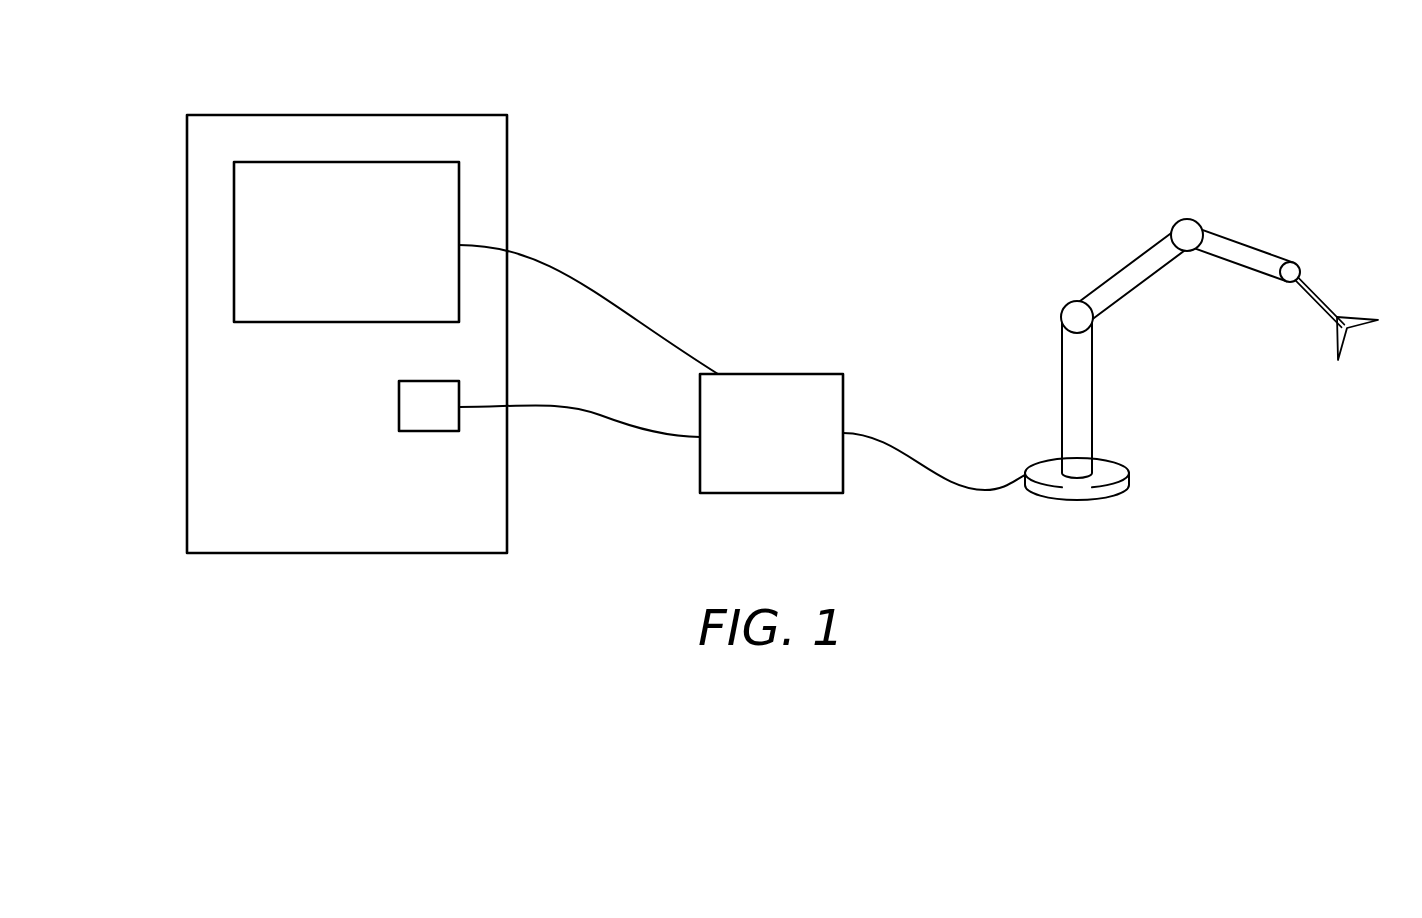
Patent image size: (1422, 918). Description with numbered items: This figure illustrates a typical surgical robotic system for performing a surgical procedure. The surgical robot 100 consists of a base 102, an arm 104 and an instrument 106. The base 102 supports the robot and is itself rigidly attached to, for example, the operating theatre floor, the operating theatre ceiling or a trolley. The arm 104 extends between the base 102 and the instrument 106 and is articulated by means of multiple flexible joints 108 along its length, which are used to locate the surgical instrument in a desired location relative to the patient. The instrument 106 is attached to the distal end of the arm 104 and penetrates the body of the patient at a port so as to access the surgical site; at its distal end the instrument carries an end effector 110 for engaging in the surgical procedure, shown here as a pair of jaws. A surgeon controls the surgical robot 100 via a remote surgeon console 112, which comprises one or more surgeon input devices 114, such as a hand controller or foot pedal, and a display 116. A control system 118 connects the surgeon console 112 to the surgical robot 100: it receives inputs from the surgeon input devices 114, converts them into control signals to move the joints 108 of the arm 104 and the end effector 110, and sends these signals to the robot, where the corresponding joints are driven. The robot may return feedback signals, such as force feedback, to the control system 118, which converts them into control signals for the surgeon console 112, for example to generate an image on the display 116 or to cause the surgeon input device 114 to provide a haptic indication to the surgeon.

The surgical robot 100 is at (1089, 209).
The base 102 is at (1130, 474).
The arm 104 is at (1151, 292).
The instrument 106 is at (1329, 293).
The flexible joints 108 is at (1069, 311).
The end effector 110 is at (1345, 348).
The surgeon console 112 is at (467, 82).
The surgeon input device 114 is at (399, 398).
The display 116 is at (234, 180).
The control system 118 is at (813, 496).